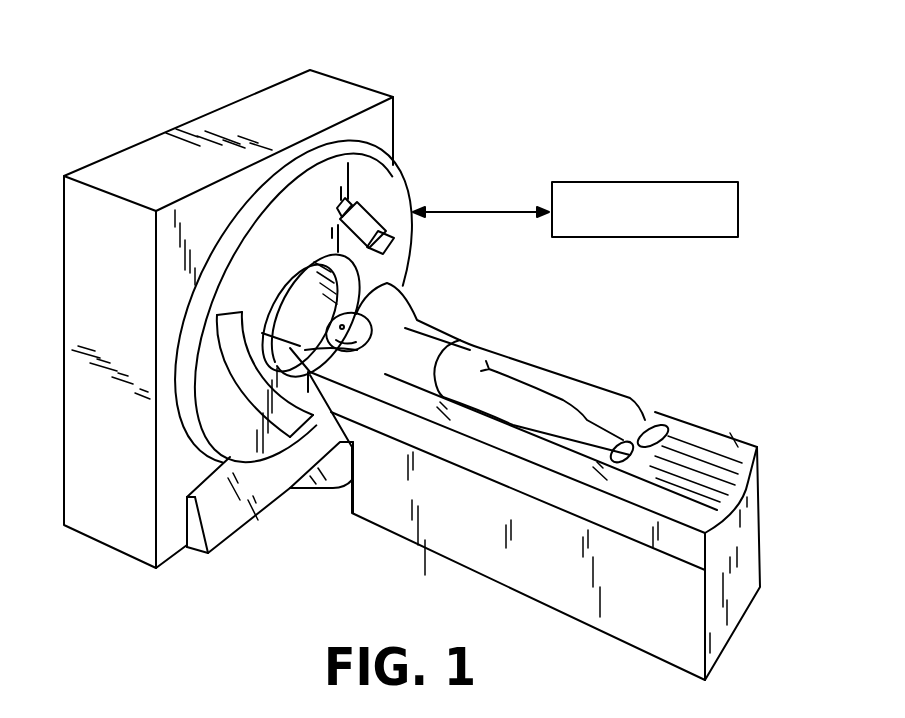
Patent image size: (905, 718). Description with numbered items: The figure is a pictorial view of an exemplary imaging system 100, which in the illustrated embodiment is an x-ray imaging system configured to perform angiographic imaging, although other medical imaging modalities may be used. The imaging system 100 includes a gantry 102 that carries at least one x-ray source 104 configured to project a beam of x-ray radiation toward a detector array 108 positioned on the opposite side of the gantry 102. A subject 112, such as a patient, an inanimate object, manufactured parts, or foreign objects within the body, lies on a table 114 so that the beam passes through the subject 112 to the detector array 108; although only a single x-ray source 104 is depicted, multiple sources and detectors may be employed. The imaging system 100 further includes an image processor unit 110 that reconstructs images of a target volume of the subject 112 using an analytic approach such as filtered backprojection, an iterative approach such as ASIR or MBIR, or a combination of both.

The imaging system 100 is at (681, 56).
The gantry 102 is at (338, 90).
The x-ray source 104 is at (386, 232).
The detector array 108 is at (280, 417).
The image processor unit 110 is at (696, 182).
The subject 112 is at (424, 338).
The table 114 is at (712, 441).